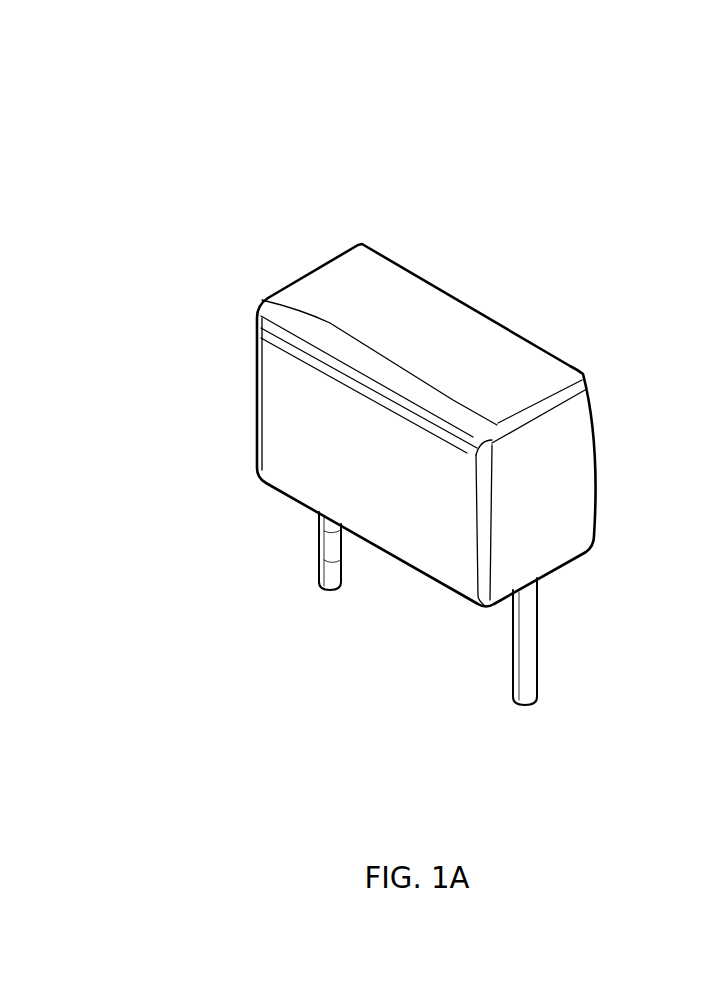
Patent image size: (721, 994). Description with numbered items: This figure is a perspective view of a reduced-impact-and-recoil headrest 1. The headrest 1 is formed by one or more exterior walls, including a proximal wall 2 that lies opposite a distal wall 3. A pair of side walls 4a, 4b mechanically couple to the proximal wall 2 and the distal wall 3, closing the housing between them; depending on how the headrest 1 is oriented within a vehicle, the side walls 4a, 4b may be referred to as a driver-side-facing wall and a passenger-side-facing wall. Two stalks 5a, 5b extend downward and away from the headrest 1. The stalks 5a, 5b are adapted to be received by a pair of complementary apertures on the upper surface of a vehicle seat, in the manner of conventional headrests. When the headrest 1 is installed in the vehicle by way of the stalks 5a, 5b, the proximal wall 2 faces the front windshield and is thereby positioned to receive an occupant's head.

The reduced-impact-and-recoil headrest 1 is at (438, 195).
The proximal wall 2 is at (272, 408).
The distal wall 3 is at (532, 316).
The side wall 4a is at (550, 455).
The side wall 4b is at (257, 256).
The stalk 5a is at (525, 626).
The stalk 5b is at (330, 578).